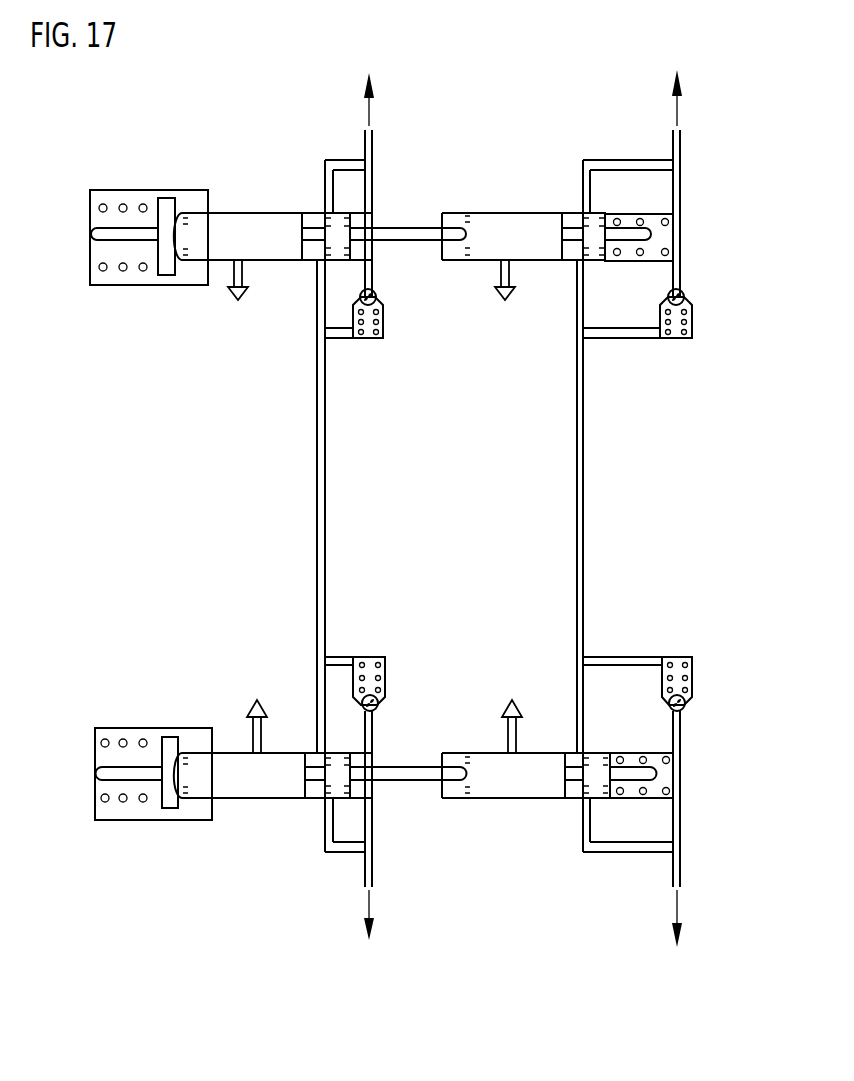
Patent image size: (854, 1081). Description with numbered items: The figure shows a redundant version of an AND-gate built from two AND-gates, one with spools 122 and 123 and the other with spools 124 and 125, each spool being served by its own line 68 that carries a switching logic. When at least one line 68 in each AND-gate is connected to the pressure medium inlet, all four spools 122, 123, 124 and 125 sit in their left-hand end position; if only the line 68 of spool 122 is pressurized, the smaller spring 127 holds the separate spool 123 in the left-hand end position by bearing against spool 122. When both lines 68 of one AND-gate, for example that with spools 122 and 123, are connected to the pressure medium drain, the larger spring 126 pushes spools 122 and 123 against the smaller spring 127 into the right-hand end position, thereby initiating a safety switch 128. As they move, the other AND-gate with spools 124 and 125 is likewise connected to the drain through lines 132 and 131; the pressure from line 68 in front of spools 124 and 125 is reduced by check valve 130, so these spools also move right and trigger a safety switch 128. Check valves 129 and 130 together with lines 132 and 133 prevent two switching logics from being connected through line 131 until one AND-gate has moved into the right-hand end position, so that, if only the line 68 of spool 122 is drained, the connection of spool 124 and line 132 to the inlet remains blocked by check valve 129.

The line 68 is at (369, 115).
The spool 122 is at (240, 232).
The spool 123 is at (502, 236).
The spool 124 is at (243, 782).
The spool 125 is at (516, 782).
The larger spring 126 is at (103, 204).
The smaller spring 127 is at (668, 222).
The safety switch 128 is at (236, 303).
The check valve 129 is at (377, 301).
The check valve 130 is at (378, 706).
The line 131 is at (580, 508).
The line 132 is at (325, 195).
The line 133 is at (330, 822).